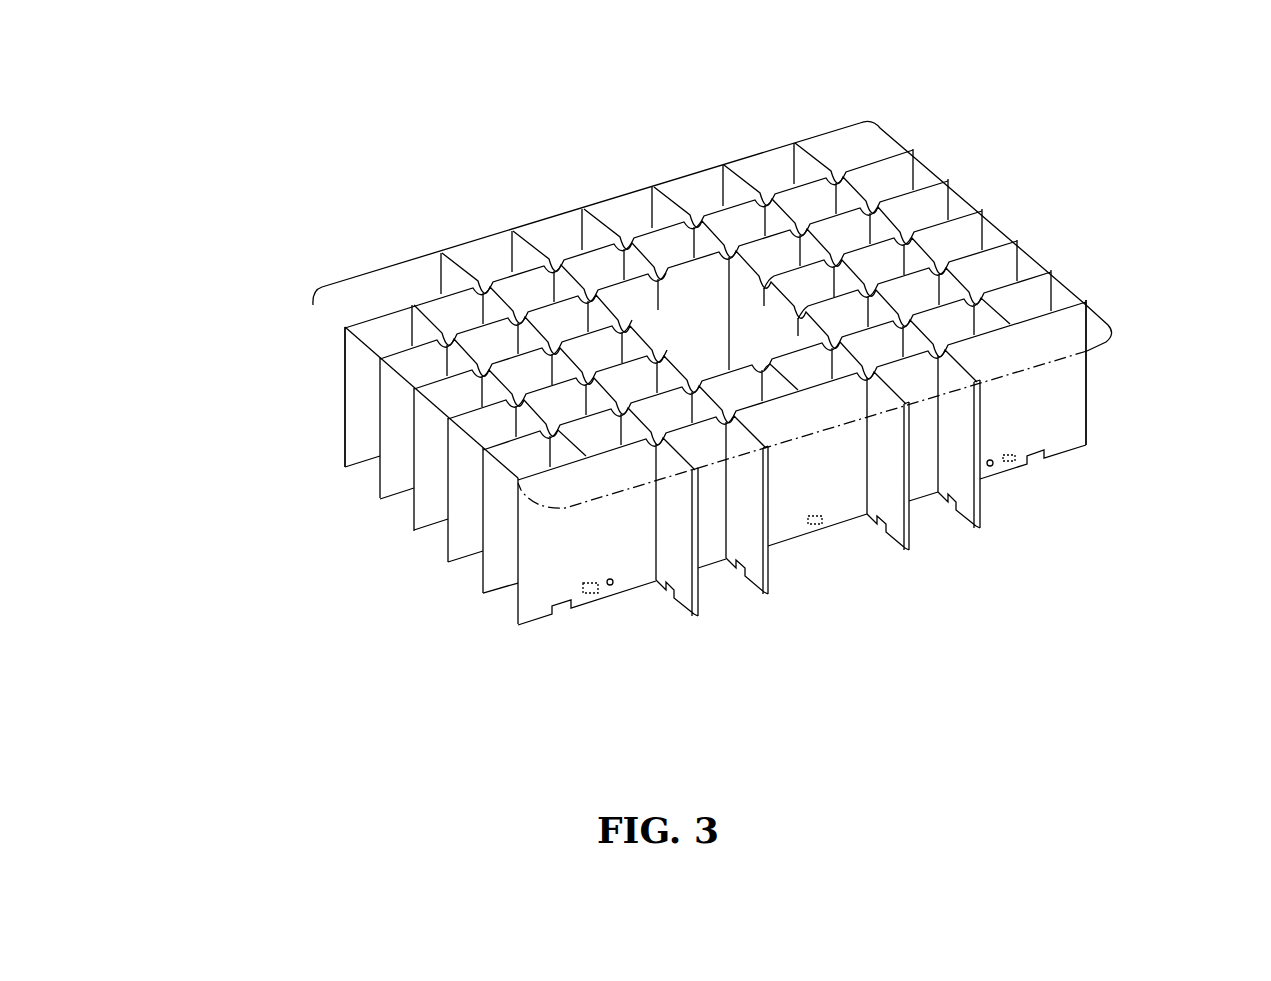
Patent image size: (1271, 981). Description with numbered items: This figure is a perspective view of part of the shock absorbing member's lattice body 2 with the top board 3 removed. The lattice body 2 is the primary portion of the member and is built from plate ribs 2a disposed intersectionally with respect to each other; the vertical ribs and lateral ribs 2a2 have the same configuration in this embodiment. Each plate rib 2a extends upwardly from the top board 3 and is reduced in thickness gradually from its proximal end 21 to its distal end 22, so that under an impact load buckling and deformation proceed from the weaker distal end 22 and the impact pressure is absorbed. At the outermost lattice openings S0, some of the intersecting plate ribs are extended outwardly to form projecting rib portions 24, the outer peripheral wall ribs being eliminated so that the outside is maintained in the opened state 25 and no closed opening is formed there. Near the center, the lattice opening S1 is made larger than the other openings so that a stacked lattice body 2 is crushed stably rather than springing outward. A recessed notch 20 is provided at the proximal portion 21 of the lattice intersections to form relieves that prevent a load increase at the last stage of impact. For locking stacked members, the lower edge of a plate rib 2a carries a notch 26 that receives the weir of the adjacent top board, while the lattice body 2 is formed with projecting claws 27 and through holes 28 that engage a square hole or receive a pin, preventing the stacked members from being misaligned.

The lattice body 2 is at (714, 382).
The top board 3 is at (353, 283).
The recessed notch 20 is at (866, 190).
The proximal end 21 is at (340, 331).
The distal end 22 is at (345, 467).
The projecting rib portion 24 is at (745, 170).
The opened state 25 is at (700, 192).
The notch 26 is at (562, 607).
The projecting claw 27 is at (600, 594).
The through hole 28 is at (615, 588).
The plate rib 2a is at (362, 390).
The lateral rib 2a2 is at (1086, 398).
The outermost lattice opening S0 is at (815, 210).
The central lattice opening S1 is at (653, 333).